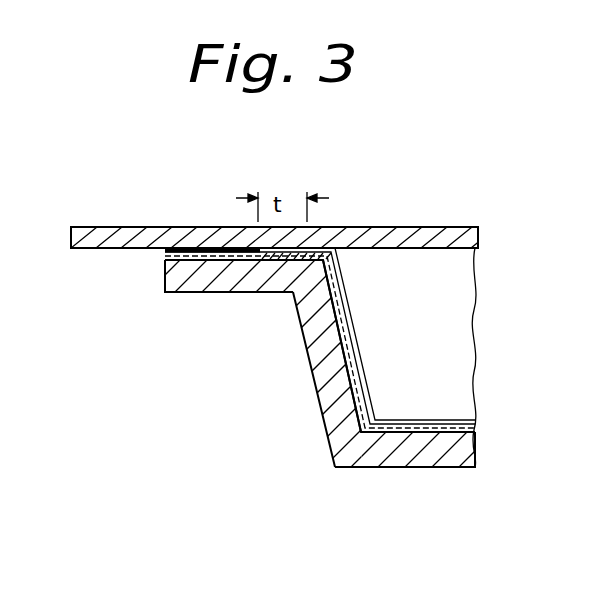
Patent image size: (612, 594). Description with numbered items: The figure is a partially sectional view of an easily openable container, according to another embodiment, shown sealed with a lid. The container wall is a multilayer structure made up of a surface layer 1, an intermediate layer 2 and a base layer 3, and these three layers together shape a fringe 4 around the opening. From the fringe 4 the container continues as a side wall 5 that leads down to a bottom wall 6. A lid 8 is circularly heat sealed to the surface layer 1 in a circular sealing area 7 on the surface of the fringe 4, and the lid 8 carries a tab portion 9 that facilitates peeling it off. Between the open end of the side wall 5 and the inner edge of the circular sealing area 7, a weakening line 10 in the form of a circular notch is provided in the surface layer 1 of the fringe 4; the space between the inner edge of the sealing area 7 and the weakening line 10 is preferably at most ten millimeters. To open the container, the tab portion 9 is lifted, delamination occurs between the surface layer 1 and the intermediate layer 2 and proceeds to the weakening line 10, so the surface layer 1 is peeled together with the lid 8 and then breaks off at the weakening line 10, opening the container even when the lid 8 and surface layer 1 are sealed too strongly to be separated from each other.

The surface layer 1 is at (163, 250).
The intermediate layer 2 is at (162, 254).
The base layer 3 is at (160, 258).
The fringe 4 is at (227, 293).
The side wall 5 is at (315, 386).
The bottom wall 6 is at (418, 468).
The circular sealing area 7 is at (212, 247).
The lid 8 is at (167, 227).
The tab portion 9 is at (99, 233).
The weakening line 10 is at (305, 247).